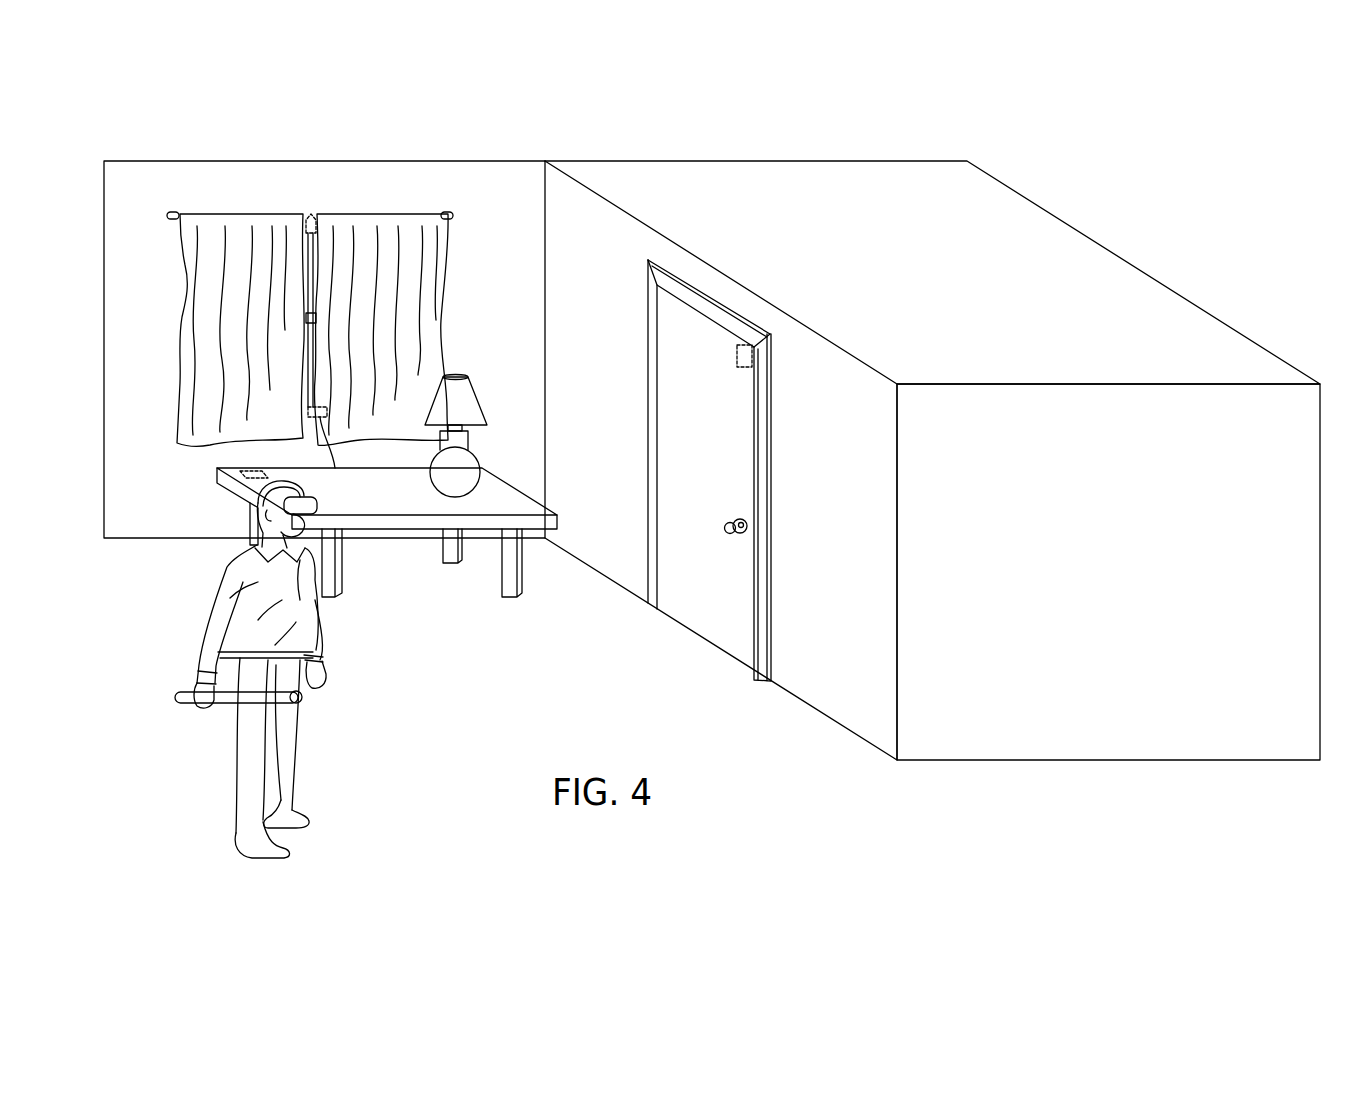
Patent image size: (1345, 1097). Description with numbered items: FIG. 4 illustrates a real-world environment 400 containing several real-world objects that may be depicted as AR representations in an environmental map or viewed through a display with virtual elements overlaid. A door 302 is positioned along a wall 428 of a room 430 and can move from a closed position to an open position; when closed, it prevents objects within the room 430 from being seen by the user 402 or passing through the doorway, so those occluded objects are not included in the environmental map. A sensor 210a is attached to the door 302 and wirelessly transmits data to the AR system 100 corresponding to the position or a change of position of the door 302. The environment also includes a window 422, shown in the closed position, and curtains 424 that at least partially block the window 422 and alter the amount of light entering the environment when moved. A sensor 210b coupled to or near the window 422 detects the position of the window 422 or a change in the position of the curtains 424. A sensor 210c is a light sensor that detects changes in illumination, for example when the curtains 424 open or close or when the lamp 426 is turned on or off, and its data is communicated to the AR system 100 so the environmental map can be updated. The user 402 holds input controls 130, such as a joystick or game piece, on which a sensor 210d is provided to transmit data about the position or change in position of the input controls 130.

The real-world environment 400 is at (150, 107).
The curtains 424 is at (188, 248).
The window 422 is at (309, 253).
The sensor 210a is at (739, 368).
The sensor 210b is at (339, 453).
The sensor 210c is at (237, 471).
The sensor 210d is at (305, 668).
The lamp 426 is at (458, 397).
The AR system 100 is at (317, 505).
The user 402 is at (220, 590).
The input controls 130 is at (292, 706).
The door 302 is at (735, 447).
The wall 428 is at (879, 418).
The room 430 is at (1090, 283).